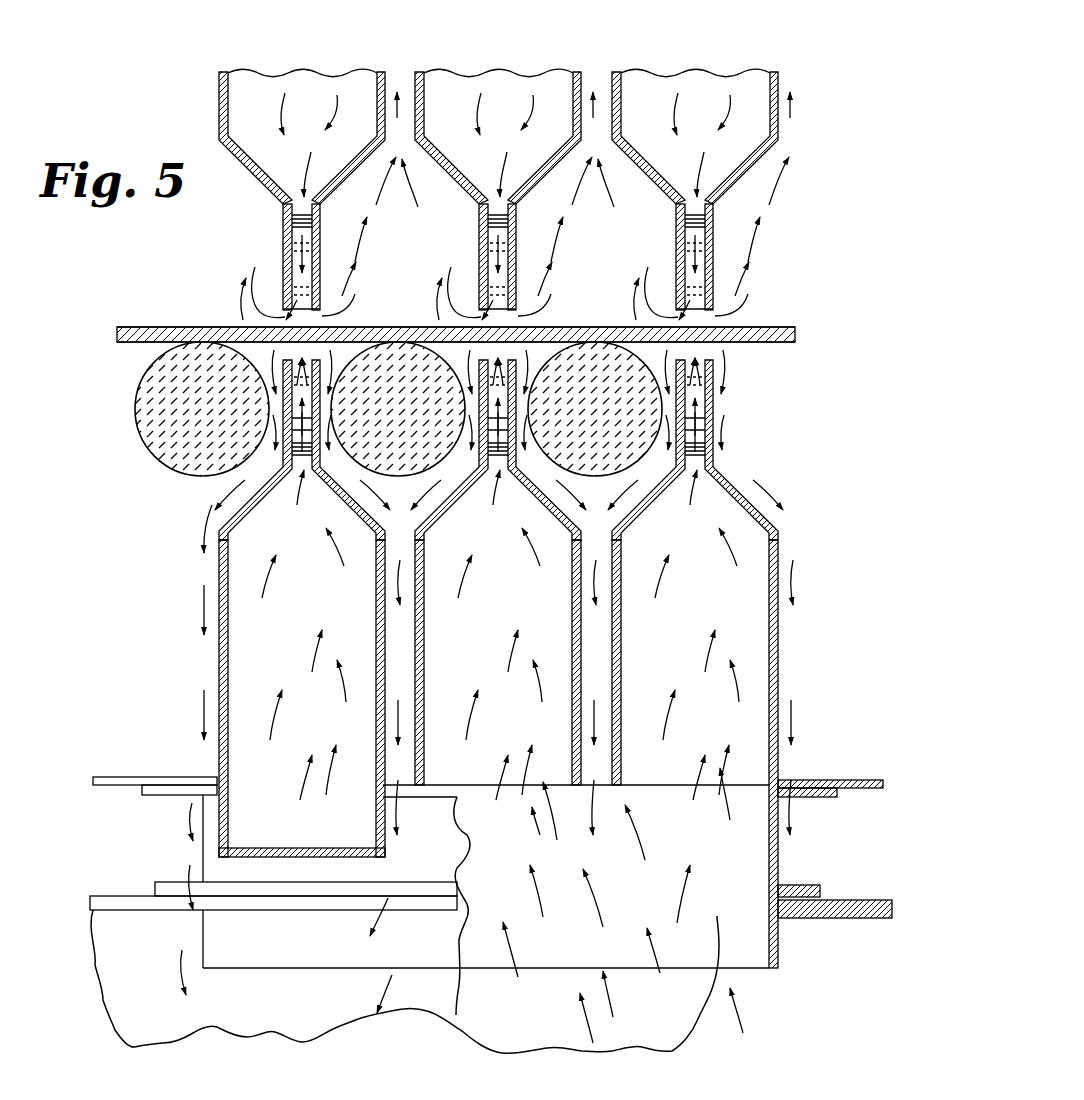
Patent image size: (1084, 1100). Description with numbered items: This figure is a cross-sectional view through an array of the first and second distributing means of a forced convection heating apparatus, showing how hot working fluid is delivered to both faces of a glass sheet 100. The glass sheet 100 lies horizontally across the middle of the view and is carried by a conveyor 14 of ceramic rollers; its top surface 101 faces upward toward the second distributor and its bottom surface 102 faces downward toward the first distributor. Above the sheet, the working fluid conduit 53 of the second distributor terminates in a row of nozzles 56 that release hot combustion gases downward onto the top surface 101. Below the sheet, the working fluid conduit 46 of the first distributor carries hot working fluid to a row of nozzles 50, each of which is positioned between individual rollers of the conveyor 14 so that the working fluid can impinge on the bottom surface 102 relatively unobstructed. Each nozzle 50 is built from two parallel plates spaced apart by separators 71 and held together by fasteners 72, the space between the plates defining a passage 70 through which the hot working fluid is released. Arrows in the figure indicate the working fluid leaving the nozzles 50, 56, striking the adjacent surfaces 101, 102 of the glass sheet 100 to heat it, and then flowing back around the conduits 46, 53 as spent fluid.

The conveyor 14 is at (135, 416).
The working fluid conduit 46 is at (325, 621).
The nozzle 50 is at (328, 323).
The working fluid conduit 53 is at (262, 95).
The nozzle 56 is at (283, 297).
The passage 70 is at (327, 303).
The separator 71 is at (312, 227).
The fastener 72 is at (314, 257).
The glass sheet 100 is at (132, 324).
The top surface 101 is at (178, 325).
The bottom surface 102 is at (140, 344).